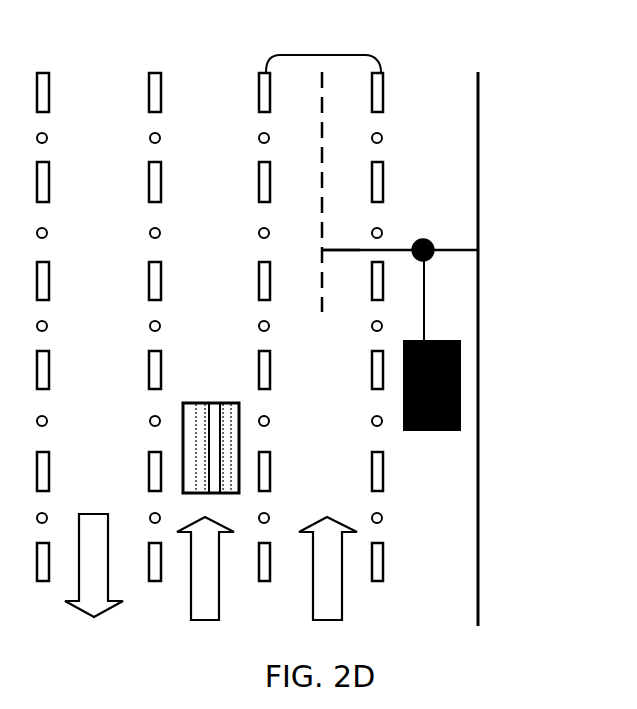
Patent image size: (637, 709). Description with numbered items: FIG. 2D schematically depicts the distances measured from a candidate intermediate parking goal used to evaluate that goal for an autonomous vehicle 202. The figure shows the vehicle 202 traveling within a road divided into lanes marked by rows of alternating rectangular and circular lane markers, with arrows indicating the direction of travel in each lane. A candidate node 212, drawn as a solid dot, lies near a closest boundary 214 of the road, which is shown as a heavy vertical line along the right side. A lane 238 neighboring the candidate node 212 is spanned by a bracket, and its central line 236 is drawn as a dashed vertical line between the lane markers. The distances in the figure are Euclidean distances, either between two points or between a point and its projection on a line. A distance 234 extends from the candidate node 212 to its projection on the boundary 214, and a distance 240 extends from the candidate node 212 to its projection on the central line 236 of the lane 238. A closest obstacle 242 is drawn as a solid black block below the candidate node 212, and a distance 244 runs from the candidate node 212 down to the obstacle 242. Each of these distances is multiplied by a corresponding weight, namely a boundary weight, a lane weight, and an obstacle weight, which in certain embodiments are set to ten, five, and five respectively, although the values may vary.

The autonomous vehicle 202 is at (203, 403).
The candidate node 212 is at (430, 256).
The boundary 214 is at (477, 160).
The distance 234 is at (455, 248).
The central line 236 is at (322, 200).
The lane 238 is at (322, 54).
The distance 240 is at (350, 251).
The obstacle 242 is at (461, 383).
The distance 244 is at (426, 295).